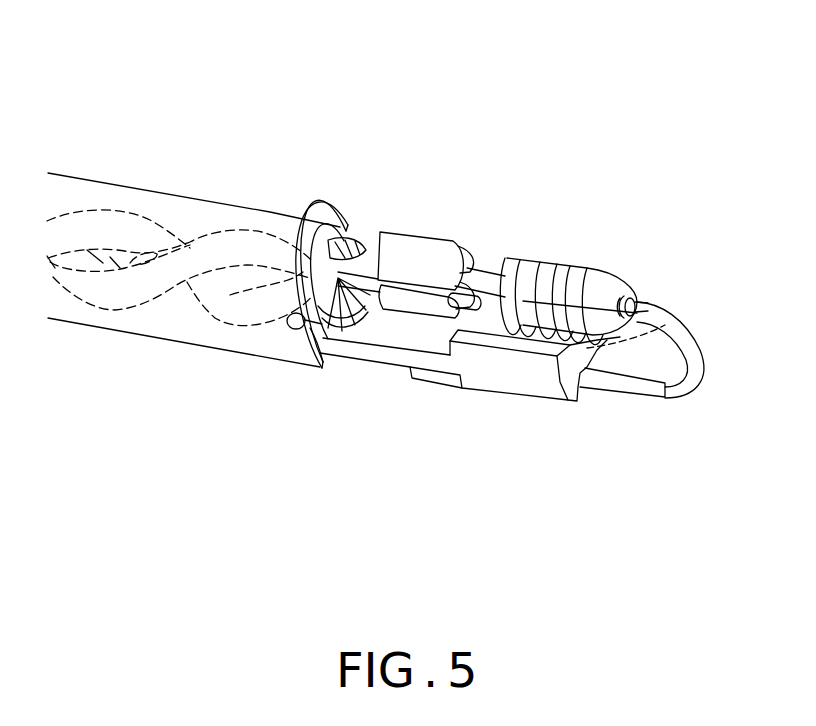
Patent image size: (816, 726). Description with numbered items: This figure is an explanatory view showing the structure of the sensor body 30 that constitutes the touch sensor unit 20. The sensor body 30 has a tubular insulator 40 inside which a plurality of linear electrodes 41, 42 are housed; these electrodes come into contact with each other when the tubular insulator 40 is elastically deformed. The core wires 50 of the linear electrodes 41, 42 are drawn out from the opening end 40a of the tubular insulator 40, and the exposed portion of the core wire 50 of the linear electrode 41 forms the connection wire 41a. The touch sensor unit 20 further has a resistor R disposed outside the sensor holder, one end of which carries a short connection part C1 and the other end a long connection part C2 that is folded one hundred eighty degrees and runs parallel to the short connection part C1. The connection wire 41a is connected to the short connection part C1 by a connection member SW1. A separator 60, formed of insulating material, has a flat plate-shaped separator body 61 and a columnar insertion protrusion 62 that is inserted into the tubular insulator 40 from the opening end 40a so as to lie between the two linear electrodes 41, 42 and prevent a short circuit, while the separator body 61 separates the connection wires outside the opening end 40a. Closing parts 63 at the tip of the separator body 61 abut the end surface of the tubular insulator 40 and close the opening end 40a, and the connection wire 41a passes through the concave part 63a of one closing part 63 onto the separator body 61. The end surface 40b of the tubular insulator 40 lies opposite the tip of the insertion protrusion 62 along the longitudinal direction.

The touch sensor unit 20 is at (128, 45).
The sensor body 30 is at (548, 319).
The tubular insulator 40 is at (143, 187).
The opening end 40a is at (303, 228).
The end surface 40b is at (340, 366).
The linear electrode 41 is at (229, 325).
The connection wire 41a is at (451, 413).
The linear electrode 42 is at (229, 232).
The core wire 50 is at (470, 330).
The separator 60 is at (578, 412).
The separator body 61 is at (600, 352).
The insertion protrusion 62 is at (166, 287).
The closing part 63 is at (332, 367).
The concave part 63a is at (359, 233).
The connection member SW1 is at (437, 230).
The short connection part C1 is at (498, 258).
The long connection part C2 is at (643, 398).
The resistor R is at (577, 263).